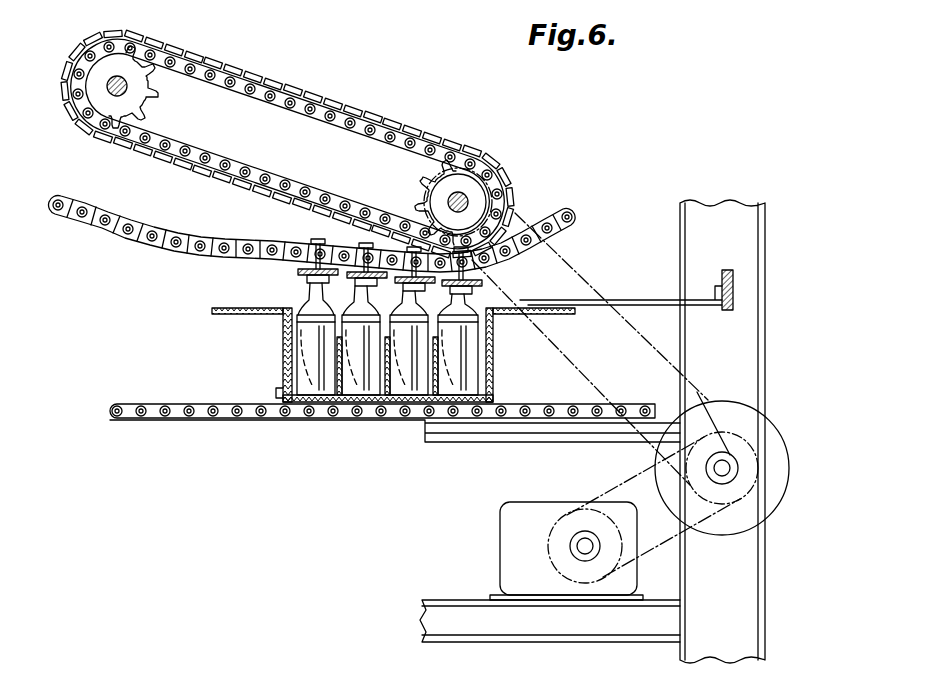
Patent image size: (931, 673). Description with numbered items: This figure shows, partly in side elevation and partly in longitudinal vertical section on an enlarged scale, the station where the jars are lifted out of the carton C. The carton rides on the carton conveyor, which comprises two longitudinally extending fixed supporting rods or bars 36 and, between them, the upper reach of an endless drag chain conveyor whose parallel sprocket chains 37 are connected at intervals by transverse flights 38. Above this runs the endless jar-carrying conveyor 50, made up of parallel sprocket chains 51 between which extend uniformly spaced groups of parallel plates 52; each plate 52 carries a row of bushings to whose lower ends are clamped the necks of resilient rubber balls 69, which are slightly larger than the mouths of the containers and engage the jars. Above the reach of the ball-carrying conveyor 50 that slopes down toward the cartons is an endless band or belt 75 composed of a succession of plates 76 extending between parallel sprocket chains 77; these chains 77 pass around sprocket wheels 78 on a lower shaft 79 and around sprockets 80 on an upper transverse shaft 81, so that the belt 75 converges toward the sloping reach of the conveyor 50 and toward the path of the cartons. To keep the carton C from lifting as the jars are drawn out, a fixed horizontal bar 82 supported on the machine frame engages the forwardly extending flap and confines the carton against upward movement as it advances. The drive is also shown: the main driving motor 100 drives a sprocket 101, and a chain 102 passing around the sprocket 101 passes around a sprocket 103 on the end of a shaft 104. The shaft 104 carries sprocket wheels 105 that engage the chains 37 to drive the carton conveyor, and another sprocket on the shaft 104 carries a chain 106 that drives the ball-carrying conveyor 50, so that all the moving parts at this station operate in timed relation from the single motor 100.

The fixed supporting rods 36 is at (176, 405).
The sprocket chains 37 is at (128, 405).
The transverse flights 38 is at (280, 393).
The endless conveyor 50 is at (138, 222).
The sprocket chains 51 is at (206, 243).
The plates 52 is at (298, 272).
The resilient rubber ball 69 is at (300, 297).
The endless band or belt 75 is at (334, 99).
The plates 76 is at (386, 118).
The sprocket chains 77 is at (306, 120).
The sprocket wheels 78 is at (416, 181).
The lower shaft 79 is at (462, 192).
The sprockets 80 is at (157, 96).
The upper transverse shaft 81 is at (125, 80).
The fixed horizontal bar 82 is at (600, 300).
The main driving motor 100 is at (500, 538).
The sprocket 101 is at (562, 512).
The chain 102 is at (628, 470).
The sprocket 103 is at (683, 397).
The shaft 104 is at (727, 452).
The sprocket wheels 105 is at (744, 535).
The chain 106 is at (584, 268).
The case C is at (244, 308).